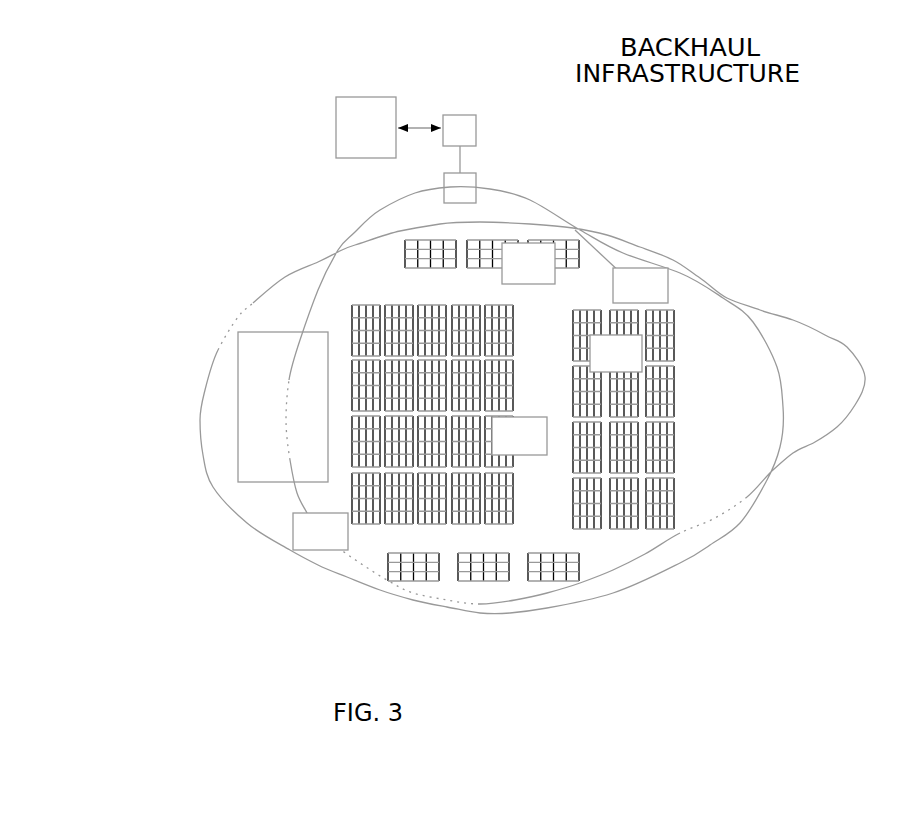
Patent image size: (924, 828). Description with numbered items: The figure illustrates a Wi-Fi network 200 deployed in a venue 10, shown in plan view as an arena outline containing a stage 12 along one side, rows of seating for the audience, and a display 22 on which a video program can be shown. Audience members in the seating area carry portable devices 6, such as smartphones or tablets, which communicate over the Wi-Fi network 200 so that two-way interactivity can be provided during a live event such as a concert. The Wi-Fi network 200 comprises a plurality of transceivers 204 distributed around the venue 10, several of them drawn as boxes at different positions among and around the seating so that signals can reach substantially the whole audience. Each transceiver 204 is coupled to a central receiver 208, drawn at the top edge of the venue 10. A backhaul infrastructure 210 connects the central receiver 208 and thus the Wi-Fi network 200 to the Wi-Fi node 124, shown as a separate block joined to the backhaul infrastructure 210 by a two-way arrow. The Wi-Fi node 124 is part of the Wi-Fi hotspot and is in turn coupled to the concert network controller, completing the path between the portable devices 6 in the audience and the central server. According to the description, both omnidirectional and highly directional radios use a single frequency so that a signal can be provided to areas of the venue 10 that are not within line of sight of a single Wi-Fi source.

The venue 10 is at (729, 171).
The stage 12 is at (278, 402).
The display 22 is at (542, 262).
The portable device 6 is at (513, 410).
The Wi-Fi node 124 is at (388, 127).
The Wi-Fi network 200 is at (297, 498).
The transceiver 204 is at (660, 275).
The central receiver 208 is at (477, 178).
The backhaul infrastructure 210 is at (473, 114).